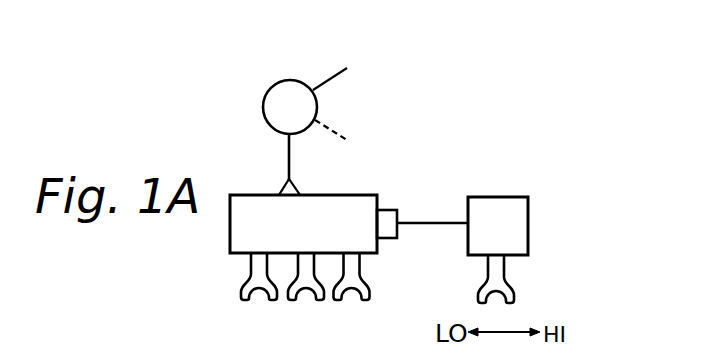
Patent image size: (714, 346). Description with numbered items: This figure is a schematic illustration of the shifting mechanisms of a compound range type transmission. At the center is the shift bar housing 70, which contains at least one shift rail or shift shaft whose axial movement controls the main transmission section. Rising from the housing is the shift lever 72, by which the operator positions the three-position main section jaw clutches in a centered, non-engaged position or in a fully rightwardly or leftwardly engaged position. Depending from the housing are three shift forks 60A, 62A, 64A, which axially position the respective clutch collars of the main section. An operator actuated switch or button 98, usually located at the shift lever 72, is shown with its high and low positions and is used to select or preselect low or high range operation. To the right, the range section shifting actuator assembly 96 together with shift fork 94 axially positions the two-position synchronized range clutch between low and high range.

The operator actuated switch or button 98 is at (328, 80).
The shift lever 72 is at (288, 136).
The shift bar housing 70 is at (248, 220).
The range section shifting actuator assembly 96 is at (505, 197).
The shift fork 94 is at (505, 273).
The shift fork 60A is at (242, 295).
The shift fork 62A is at (313, 270).
The shift fork 64A is at (360, 270).